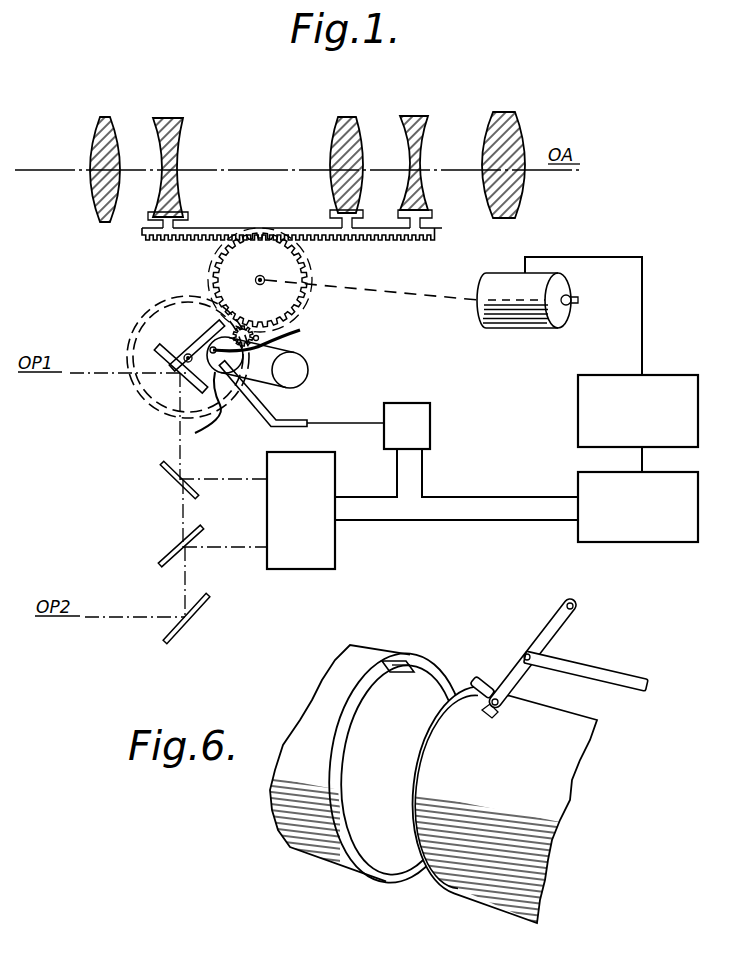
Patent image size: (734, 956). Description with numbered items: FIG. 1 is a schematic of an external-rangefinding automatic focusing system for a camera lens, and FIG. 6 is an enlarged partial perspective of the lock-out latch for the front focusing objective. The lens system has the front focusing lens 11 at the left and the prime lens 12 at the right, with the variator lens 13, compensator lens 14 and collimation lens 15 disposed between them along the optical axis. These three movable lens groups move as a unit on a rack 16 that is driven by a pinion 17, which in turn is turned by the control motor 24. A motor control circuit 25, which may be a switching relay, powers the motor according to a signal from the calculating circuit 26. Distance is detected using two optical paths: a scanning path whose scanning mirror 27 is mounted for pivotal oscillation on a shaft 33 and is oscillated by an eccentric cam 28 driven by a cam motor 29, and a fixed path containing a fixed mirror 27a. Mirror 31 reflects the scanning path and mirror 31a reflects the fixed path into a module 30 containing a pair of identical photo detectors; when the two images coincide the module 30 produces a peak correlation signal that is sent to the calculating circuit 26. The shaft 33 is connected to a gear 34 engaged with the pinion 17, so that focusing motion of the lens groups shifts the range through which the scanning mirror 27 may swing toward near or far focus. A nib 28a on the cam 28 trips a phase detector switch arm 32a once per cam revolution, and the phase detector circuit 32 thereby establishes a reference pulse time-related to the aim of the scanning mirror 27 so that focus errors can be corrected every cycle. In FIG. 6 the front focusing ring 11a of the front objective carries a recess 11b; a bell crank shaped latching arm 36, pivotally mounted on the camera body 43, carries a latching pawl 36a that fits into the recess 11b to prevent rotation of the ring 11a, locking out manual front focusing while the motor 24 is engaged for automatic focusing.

In FIG. 1, the front focusing lens 11 is at (105, 115).
In FIG. 1, the prime lens 12 is at (510, 90).
In FIG. 1, the variator lens 13 is at (170, 118).
In FIG. 1, the compensator lens 14 is at (346, 117).
In FIG. 1, the collimation lens 15 is at (420, 116).
In FIG. 1, the rack 16 is at (266, 226).
In FIG. 1, the pinion 17 is at (306, 273).
In FIG. 1, the control motor 24 is at (518, 328).
In FIG. 1, the motor control circuit 25 is at (578, 398).
In FIG. 1, the calculating circuit 26 is at (630, 531).
In FIG. 1, the scanning mirror 27 is at (180, 357).
In FIG. 1, the mirror 27a is at (188, 628).
In FIG. 1, the eccentric cam 28 is at (224, 390).
In FIG. 1, the nib 28a is at (271, 338).
In FIG. 1, the cam motor 29 is at (308, 372).
In FIG. 1, the module 30 is at (318, 570).
In FIG. 1, the mirror 31 is at (172, 481).
In FIG. 1, the mirror 31a is at (185, 542).
In FIG. 1, the phase detector circuit 32 is at (430, 428).
In FIG. 1, the phase detector switch arm 32a is at (275, 420).
In FIG. 1, the shaft 33 is at (157, 365).
In FIG. 1, the gear 34 is at (156, 306).
In FIG. 6, the front focusing ring 11a is at (398, 656).
In FIG. 6, the recess 11b is at (399, 675).
In FIG. 6, the latching arm 36 is at (566, 630).
In FIG. 6, the latching pawl 36a is at (480, 679).
In FIG. 6, the camera body 43 is at (590, 725).